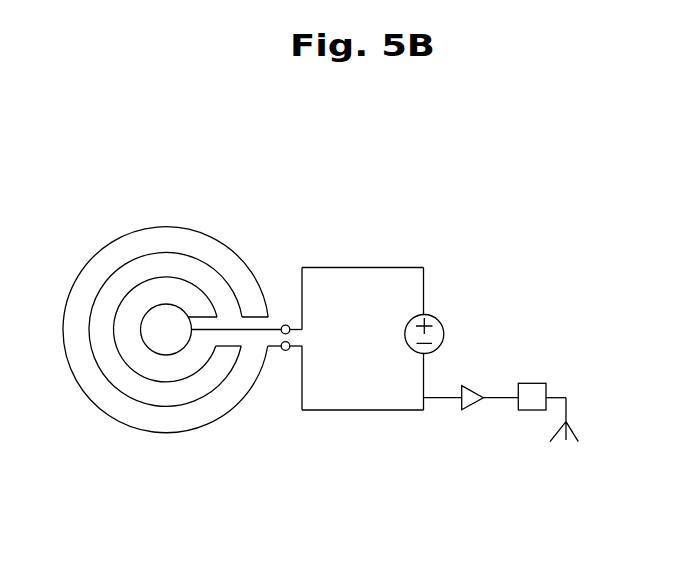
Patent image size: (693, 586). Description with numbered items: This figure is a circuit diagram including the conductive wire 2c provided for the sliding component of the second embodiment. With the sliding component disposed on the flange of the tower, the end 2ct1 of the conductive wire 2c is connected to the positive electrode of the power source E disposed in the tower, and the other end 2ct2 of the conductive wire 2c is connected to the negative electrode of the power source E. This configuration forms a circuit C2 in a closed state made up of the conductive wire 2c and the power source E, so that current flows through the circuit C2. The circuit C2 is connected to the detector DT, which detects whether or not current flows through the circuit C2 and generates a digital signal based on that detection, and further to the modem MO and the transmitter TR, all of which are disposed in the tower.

The conductive wire 2c is at (165, 433).
The end of the conductive wire 2ct1 is at (286, 325).
The end of the conductive wire 2ct2 is at (286, 351).
The circuit C2 is at (357, 267).
The power source E is at (440, 320).
The detector DT is at (472, 403).
The modem MO is at (537, 410).
The transmitter TR is at (573, 427).